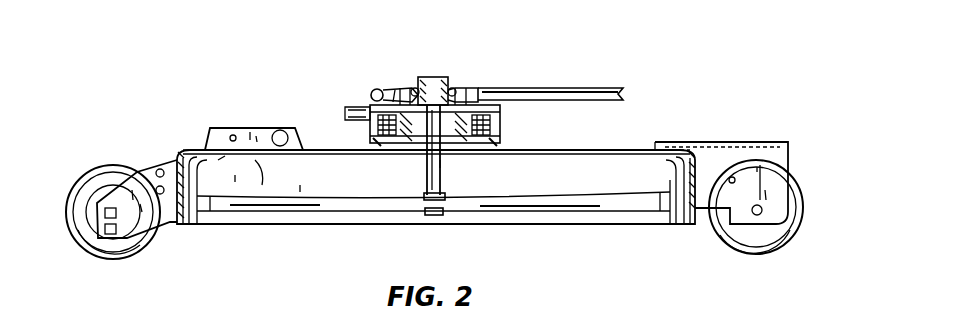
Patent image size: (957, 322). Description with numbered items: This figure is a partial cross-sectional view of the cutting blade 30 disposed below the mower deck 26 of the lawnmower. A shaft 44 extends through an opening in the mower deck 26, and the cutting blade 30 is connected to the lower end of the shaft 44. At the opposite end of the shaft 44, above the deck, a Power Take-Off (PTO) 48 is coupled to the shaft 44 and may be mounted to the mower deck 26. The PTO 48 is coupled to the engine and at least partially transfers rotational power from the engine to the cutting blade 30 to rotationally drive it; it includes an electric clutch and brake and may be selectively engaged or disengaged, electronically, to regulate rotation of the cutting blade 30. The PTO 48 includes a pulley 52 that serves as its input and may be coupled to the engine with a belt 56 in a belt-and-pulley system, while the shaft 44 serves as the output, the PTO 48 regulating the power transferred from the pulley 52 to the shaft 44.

The mower deck 26 is at (590, 147).
The cutting blade 30 is at (585, 224).
The shaft 44 is at (427, 172).
The Power Take-Off (PTO) 48 is at (473, 85).
The pulley 52 is at (388, 87).
The belt 56 is at (555, 92).